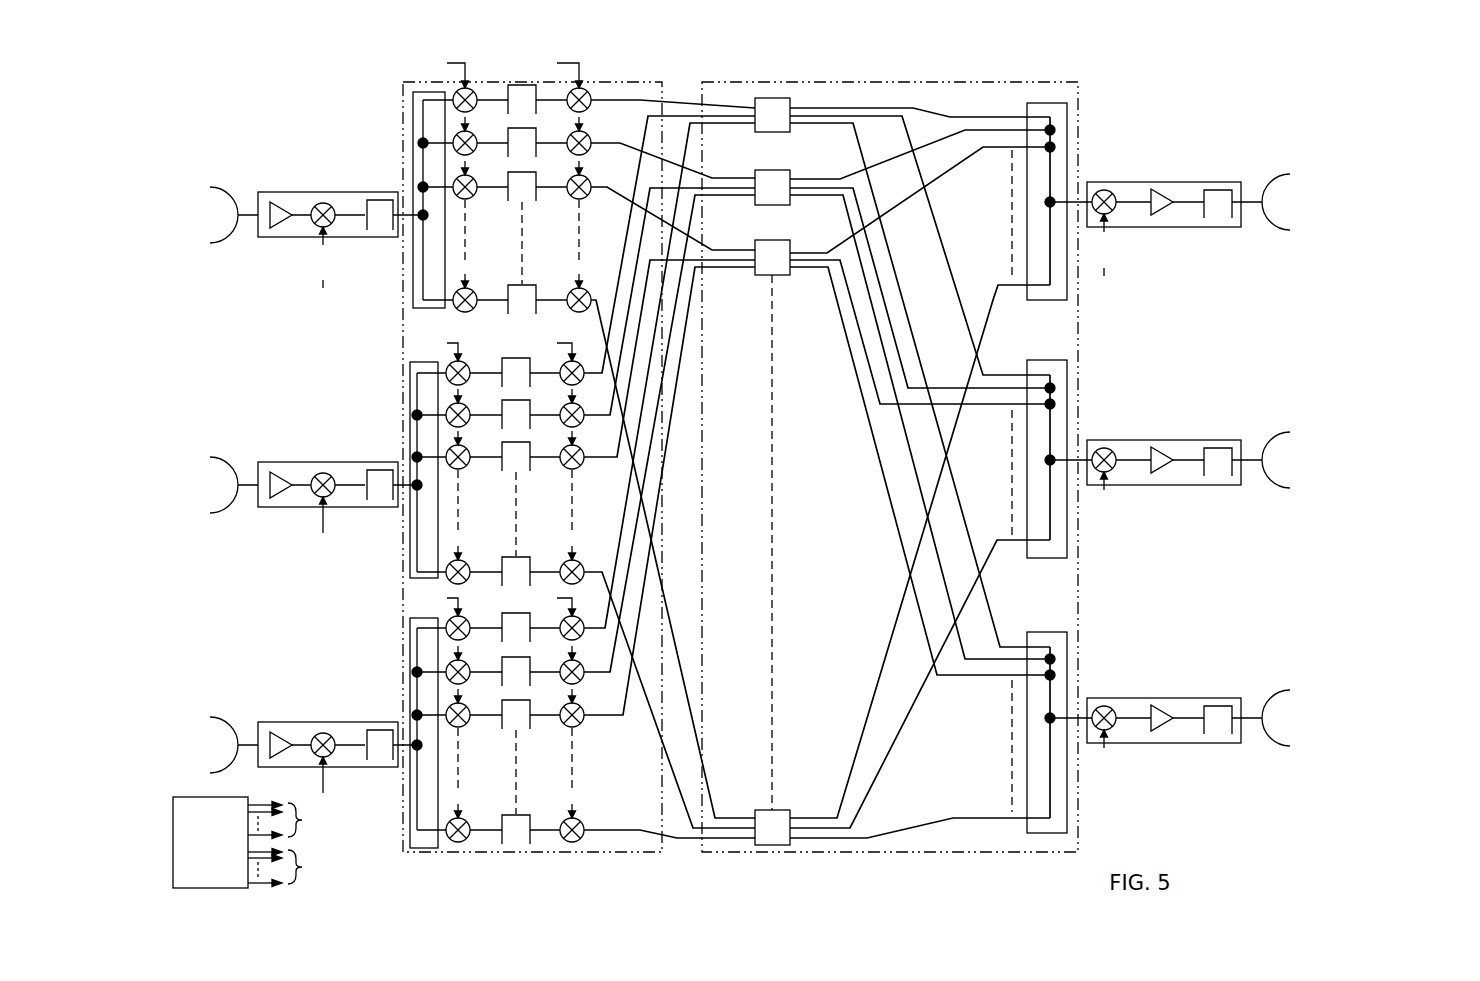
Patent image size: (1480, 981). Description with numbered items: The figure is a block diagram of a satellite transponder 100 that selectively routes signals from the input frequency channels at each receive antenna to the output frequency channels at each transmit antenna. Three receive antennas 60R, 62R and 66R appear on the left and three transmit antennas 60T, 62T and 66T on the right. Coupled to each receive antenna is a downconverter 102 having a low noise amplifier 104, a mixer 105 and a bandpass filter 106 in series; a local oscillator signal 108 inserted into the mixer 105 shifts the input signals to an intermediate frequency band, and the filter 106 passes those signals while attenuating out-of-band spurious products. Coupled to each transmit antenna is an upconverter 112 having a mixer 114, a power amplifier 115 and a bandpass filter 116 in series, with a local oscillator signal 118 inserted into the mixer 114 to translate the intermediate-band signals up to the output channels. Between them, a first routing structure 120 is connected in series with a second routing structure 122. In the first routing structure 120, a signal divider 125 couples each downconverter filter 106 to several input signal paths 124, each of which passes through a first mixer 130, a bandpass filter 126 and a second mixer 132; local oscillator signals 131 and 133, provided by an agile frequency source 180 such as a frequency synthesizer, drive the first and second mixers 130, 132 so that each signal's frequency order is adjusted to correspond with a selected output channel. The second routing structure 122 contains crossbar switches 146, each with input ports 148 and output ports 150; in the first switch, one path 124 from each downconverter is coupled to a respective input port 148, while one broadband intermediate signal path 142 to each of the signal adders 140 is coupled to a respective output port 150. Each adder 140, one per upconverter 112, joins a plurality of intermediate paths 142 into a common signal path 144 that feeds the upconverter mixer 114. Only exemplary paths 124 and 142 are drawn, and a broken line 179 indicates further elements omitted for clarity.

The transponder 100 is at (1282, 300).
The downconverter 102 is at (307, 142).
The low noise amplifier 104 is at (280, 190).
The mixer 105 is at (330, 200).
The bandpass filter 106 is at (385, 195).
The local oscillator signal 108 is at (323, 259).
The upconverter 112 is at (1193, 130).
The mixer 114 is at (1104, 190).
The power amplifier 115 is at (1162, 188).
The bandpass filter 116 is at (1218, 190).
The local oscillator signal 118 is at (1105, 247).
The first routing structure 120 is at (401, 298).
The second routing structure 122 is at (1083, 300).
The input signal path 124 is at (663, 84).
The signal divider 125 is at (413, 113).
The bandpass filter 126 is at (516, 87).
The first mixer 130 is at (413, 92).
The local oscillator signal 131 is at (438, 435).
The second mixer 132 is at (591, 97).
The local oscillator signal 133 is at (551, 435).
The signal adder 140 is at (1057, 103).
The broadband intermediate signal path 142 is at (1027, 112).
The common signal path 144 is at (1075, 195).
The crossbar switch 146 is at (775, 98).
The input ports 148 is at (755, 100).
The output ports 150 is at (807, 100).
The broken line 179 is at (772, 500).
The agile frequency source 180 is at (257, 842).
The receive antenna 60R is at (210, 187).
The receive antenna 62R is at (210, 458).
The receive antenna 66R is at (210, 717).
The transmit antenna 60T is at (1270, 175).
The transmit antenna 62T is at (1270, 434).
The transmit antenna 66T is at (1270, 690).